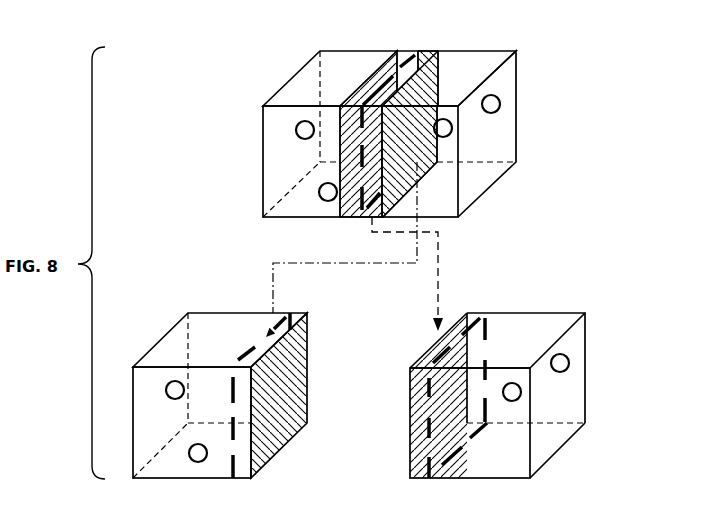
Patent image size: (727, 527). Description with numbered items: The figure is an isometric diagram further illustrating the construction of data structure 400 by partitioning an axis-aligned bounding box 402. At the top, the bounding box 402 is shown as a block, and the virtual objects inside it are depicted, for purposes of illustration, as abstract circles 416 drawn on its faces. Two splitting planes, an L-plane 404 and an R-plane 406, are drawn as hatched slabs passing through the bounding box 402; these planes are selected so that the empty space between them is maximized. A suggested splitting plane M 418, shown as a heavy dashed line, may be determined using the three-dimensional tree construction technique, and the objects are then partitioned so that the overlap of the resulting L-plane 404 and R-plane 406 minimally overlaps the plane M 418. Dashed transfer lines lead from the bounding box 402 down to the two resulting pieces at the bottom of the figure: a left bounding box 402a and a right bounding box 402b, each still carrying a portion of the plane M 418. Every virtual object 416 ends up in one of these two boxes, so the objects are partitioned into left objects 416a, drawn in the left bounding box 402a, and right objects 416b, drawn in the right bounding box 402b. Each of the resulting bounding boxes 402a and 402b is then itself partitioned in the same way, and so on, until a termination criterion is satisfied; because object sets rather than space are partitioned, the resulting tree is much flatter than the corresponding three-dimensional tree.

The data structure 400 is at (398, 108).
The bounding box 402 is at (477, 65).
The L-plane 404 is at (435, 62).
The R-plane 406 is at (373, 65).
The virtual objects 416 is at (294, 124).
The plane M 418 is at (363, 211).
The left bounding box 402a is at (217, 328).
The left objects 416a is at (170, 380).
The right bounding box 402b is at (538, 328).
The right objects 416b is at (571, 364).